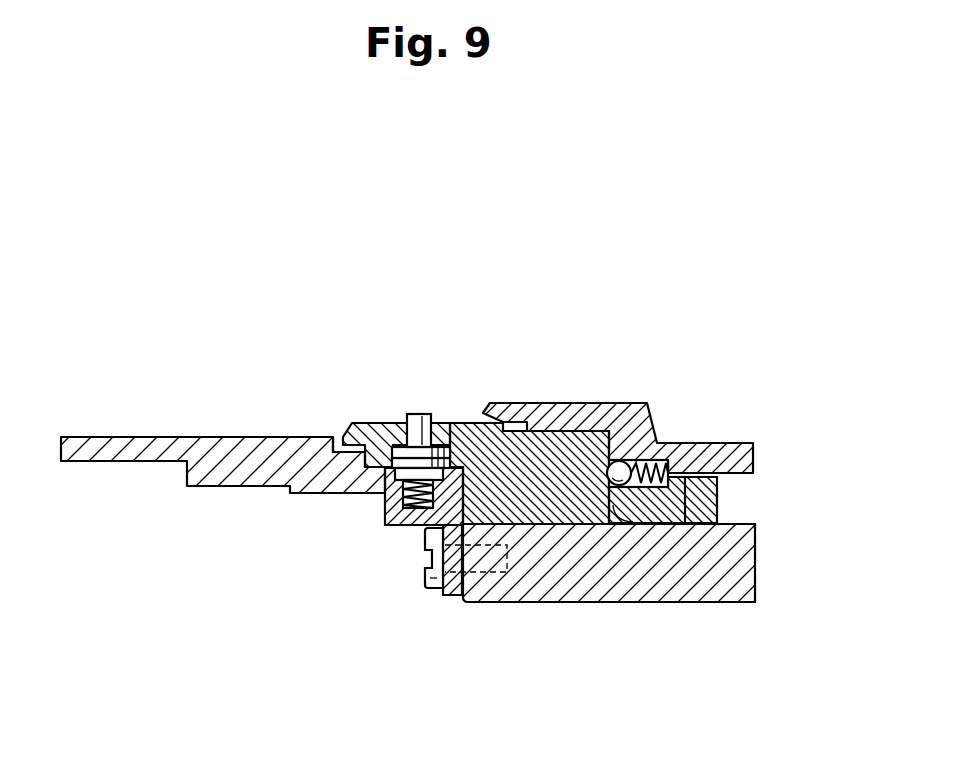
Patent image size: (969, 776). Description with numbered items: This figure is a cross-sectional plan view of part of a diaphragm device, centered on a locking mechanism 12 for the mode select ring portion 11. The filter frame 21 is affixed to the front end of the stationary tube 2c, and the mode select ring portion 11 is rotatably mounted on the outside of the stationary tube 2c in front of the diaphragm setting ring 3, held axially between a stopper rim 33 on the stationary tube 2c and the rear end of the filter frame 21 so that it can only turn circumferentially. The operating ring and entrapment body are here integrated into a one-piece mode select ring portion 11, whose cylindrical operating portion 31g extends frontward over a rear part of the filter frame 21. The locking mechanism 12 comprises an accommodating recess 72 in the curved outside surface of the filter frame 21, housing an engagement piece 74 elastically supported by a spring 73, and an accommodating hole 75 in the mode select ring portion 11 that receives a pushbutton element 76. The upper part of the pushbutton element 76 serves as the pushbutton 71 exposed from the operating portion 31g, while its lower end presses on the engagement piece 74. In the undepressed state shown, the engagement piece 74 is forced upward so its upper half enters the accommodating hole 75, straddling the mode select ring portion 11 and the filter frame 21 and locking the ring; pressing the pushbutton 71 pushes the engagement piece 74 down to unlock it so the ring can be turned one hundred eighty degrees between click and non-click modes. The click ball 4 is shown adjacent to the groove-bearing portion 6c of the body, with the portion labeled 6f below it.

The filter frame 21 is at (120, 462).
The operating portion 31g is at (343, 437).
The locking mechanism 12 is at (395, 395).
The pushbutton 71 is at (422, 413).
The accommodating hole 75 is at (392, 450).
The pushbutton element 76 is at (445, 447).
The accommodating recess 72 is at (402, 472).
The spring 73 is at (405, 500).
The engagement piece 74 is at (368, 472).
The body member 6c is at (605, 430).
The foot portion of body member 6f is at (638, 525).
The ball 4 is at (617, 461).
The diaphragm setting ring 3 is at (692, 443).
The stopper rim 33 is at (718, 503).
The mode select ring portion 11 is at (568, 531).
The stationary tube 2c is at (690, 603).